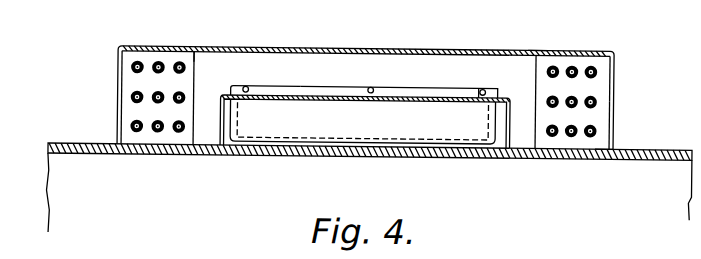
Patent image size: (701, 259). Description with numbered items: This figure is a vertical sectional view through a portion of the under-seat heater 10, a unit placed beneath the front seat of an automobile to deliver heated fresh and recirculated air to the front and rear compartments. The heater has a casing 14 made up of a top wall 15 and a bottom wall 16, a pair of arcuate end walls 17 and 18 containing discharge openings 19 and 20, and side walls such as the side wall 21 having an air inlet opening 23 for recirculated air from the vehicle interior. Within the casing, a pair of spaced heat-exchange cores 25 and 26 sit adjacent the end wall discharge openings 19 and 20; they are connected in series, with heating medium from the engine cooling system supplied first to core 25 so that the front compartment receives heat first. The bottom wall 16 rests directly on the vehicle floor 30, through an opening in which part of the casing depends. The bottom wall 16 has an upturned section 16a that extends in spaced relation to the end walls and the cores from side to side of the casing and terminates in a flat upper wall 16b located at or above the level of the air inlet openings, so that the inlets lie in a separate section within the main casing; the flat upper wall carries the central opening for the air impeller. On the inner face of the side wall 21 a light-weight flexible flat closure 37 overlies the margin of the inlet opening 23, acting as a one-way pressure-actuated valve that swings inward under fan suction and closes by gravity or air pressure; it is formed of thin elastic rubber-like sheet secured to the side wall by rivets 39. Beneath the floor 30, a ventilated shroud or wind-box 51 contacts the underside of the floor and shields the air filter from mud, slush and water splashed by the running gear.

The heater 10 is at (119, 46).
The casing 14 is at (539, 40).
The top wall 15 is at (300, 44).
The bottom wall 16 is at (598, 142).
The upturned section 16a is at (222, 126).
The flat upper wall 16b is at (224, 91).
The end wall 17 is at (613, 110).
The end wall 18 is at (117, 112).
The discharge opening 19 is at (613, 55).
The discharge opening 20 is at (117, 50).
The side wall 21 is at (208, 48).
The air inlet opening 23 is at (237, 123).
The heat-exchange core 25 is at (595, 80).
The heat-exchange core 26 is at (128, 79).
The floor 30 is at (615, 156).
The flat closure 37 is at (457, 107).
The rivet 39 is at (371, 83).
The shroud or wind-box 51 is at (57, 170).